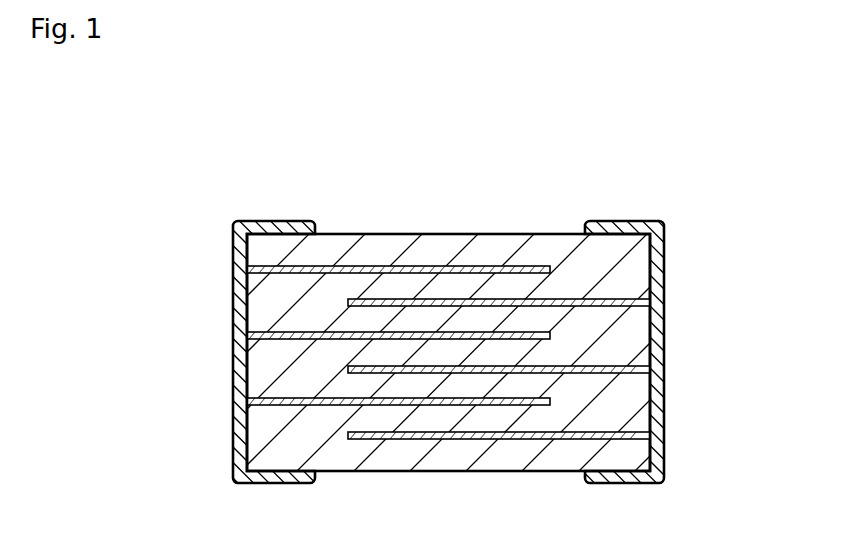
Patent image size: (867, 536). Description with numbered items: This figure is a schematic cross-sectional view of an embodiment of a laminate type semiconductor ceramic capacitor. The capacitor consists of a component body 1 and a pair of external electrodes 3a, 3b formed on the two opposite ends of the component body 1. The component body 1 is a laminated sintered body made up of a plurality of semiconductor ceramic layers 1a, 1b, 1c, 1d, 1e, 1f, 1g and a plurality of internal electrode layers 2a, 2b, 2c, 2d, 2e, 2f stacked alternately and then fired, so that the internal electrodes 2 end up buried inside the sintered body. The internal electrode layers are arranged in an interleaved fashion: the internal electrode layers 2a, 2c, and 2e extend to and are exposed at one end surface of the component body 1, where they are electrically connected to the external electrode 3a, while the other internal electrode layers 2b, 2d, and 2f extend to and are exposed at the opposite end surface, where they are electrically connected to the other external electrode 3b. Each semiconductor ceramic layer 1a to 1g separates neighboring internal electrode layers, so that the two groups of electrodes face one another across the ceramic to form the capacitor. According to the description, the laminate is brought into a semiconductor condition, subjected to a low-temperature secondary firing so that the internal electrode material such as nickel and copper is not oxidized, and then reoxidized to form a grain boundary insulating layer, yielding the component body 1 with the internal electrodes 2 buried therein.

The component body 1 is at (469, 346).
The semiconductor ceramic layer 1a is at (267, 250).
The semiconductor ceramic layer 1b is at (272, 287).
The semiconductor ceramic layer 1c is at (265, 316).
The semiconductor ceramic layer 1d is at (263, 350).
The semiconductor ceramic layer 1e is at (265, 385).
The semiconductor ceramic layer 1f is at (258, 420).
The semiconductor ceramic layer 1g is at (140, 222).
The internal electrodes 2 is at (522, 366).
The internal electrode layer 2a is at (551, 268).
The internal electrode layer 2b is at (648, 302).
The internal electrode layer 2c is at (551, 334).
The internal electrode layer 2d is at (648, 369).
The internal electrode layer 2e is at (551, 401).
The internal electrode layer 2f is at (548, 449).
The external electrode 3a is at (267, 227).
The external electrode 3b is at (656, 250).